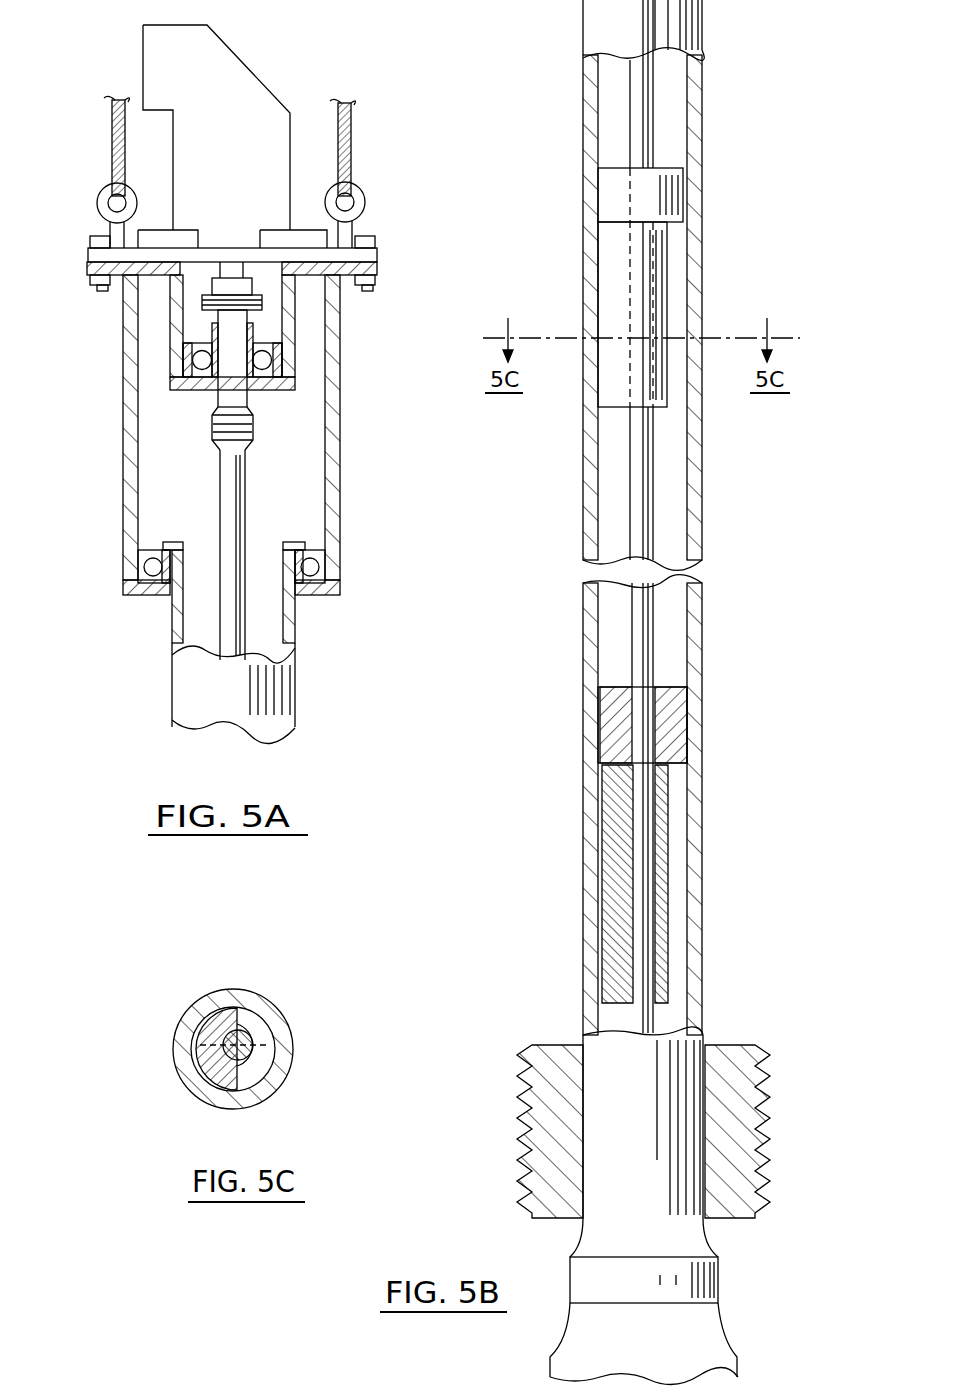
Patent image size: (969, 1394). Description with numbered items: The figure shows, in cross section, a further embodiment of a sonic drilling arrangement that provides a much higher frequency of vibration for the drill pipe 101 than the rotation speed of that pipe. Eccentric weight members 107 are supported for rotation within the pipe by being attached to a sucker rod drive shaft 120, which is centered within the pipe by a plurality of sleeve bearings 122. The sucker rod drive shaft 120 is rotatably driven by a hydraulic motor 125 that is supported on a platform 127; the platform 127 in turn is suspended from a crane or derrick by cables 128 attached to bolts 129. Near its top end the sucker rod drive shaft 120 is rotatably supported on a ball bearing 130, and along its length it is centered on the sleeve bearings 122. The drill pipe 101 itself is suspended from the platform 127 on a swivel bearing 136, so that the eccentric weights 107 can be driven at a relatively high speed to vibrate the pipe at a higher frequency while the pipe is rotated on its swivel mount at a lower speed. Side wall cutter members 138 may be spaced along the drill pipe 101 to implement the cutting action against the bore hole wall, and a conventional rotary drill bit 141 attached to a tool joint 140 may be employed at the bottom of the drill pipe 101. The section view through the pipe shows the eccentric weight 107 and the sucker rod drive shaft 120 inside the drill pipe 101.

In FIG. 5A, the drill pipe 101 is at (273, 698).
In FIG. 5B, the drill pipe 101 is at (705, 0).
In FIG. 5C, the drill pipe 101 is at (195, 1093).
In FIG. 5B, the eccentric weight members 107 is at (612, 240).
In FIG. 5C, the eccentric weight members 107 is at (218, 1020).
In FIG. 5A, the sucker rod drive shaft 120 is at (237, 480).
In FIG. 5B, the sucker rod drive shaft 120 is at (645, 125).
In FIG. 5C, the sucker rod drive shaft 120 is at (247, 1038).
In FIG. 5B, the sleeve bearings 122 is at (612, 173).
In FIG. 5A, the hydraulic motor 125 is at (248, 80).
In FIG. 5A, the platform 127 is at (90, 255).
In FIG. 5A, the cables 128 is at (115, 123).
In FIG. 5A, the bolts 129 is at (103, 192).
In FIG. 5A, the ball bearing 130 is at (293, 390).
In FIG. 5A, the swivel bearing 136 is at (315, 587).
In FIG. 5B, the side wall cutter members 138 is at (742, 1050).
In FIG. 5B, the tool joint 140 is at (697, 1238).
In FIG. 5B, the rotary drill bit 141 is at (698, 1330).